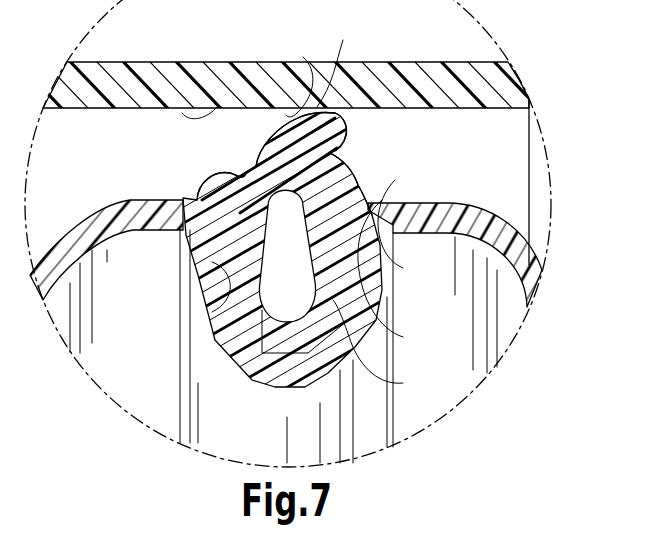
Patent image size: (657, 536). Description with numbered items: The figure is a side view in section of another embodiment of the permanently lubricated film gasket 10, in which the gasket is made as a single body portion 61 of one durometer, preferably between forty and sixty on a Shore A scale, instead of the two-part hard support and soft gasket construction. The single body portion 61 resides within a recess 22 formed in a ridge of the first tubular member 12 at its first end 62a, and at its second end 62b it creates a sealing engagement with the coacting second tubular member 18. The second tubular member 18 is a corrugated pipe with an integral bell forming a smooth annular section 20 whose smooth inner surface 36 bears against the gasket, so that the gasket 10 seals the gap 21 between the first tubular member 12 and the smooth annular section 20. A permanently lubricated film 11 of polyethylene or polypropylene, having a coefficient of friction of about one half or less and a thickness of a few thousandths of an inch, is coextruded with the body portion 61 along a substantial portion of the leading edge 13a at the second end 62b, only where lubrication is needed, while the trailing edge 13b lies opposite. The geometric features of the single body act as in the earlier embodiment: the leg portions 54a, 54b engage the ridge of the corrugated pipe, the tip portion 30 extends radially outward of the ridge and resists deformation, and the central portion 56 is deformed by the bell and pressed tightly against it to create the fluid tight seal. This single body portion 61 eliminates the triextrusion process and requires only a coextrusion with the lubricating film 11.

The permanently lubricated film annular gasket 10 is at (489, 185).
The permanently lubricated film 11 is at (233, 166).
The first tubular member 12 is at (122, 356).
The leading edge 13a is at (243, 134).
The trailing edge 13b is at (369, 146).
The second tubular member 18 is at (447, 88).
The smooth annular section 20 is at (322, 98).
The gap 21 is at (142, 130).
The recess 22 is at (213, 300).
The tip portion 30 is at (304, 105).
The smooth inner surface 36 is at (217, 107).
The leg portion 54a is at (208, 183).
The leg portion 54b is at (353, 186).
The central portion 56 is at (344, 127).
The single body portion 61 is at (397, 276).
The first end 62a is at (392, 348).
The second end 62b is at (416, 232).